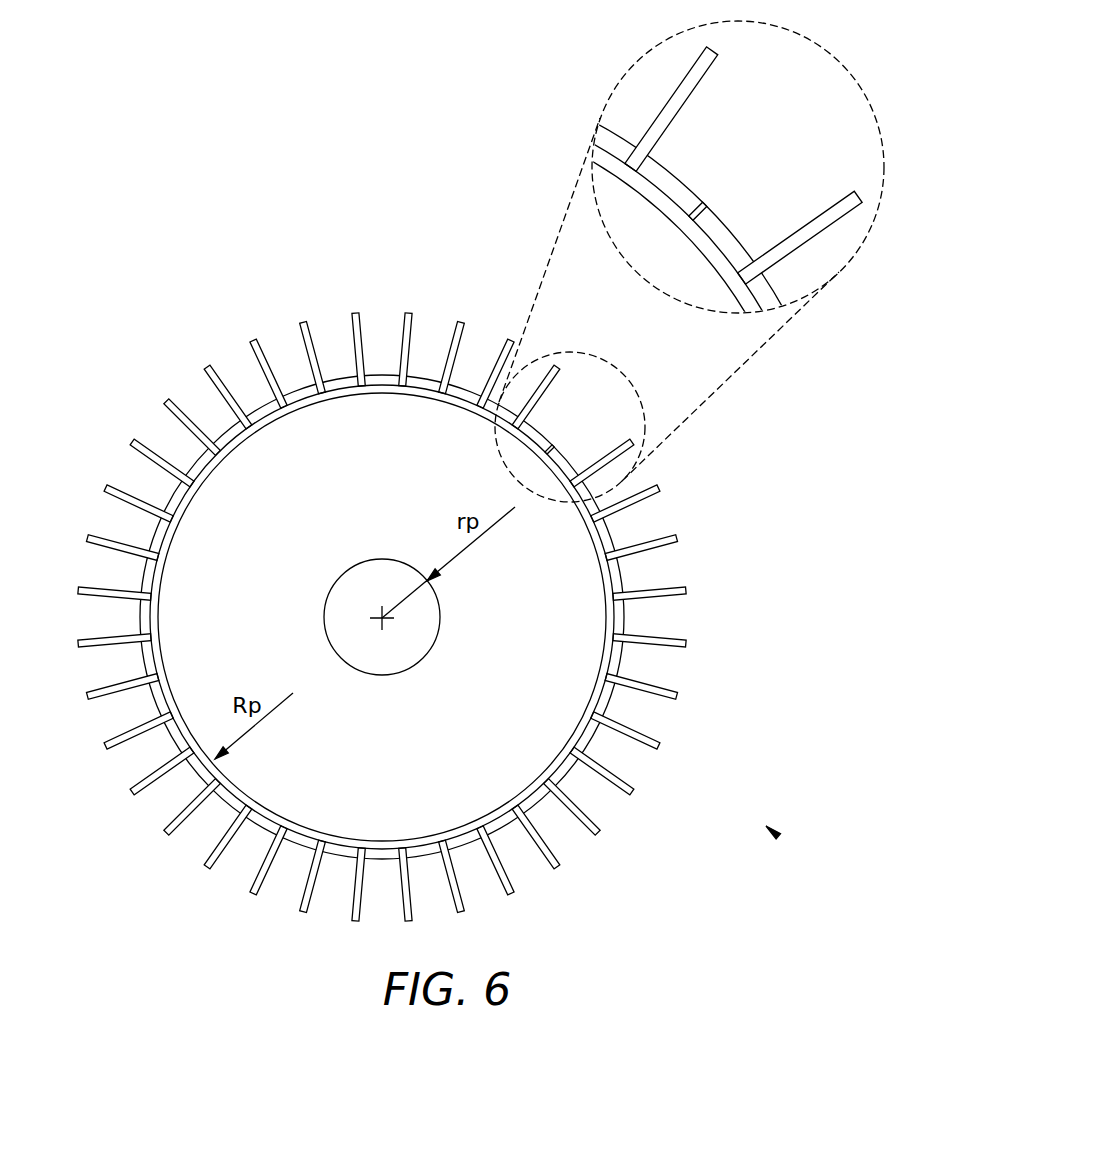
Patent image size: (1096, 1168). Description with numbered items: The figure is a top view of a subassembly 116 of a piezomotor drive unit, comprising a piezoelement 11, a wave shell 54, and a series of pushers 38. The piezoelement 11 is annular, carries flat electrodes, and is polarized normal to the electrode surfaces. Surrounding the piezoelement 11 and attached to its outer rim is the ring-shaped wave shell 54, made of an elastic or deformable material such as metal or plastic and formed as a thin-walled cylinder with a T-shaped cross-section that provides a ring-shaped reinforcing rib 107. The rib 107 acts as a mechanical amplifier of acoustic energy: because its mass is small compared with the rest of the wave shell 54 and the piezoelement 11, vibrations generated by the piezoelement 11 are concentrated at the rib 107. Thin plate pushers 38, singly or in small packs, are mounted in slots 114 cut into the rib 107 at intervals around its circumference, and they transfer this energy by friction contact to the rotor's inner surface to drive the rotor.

The piezoelement 11 is at (285, 442).
The pushers 38 is at (355, 323).
The wave shell 54 is at (165, 545).
The reinforcing rib 107 is at (192, 460).
The slots 114 is at (700, 212).
The subassembly 116 is at (778, 836).